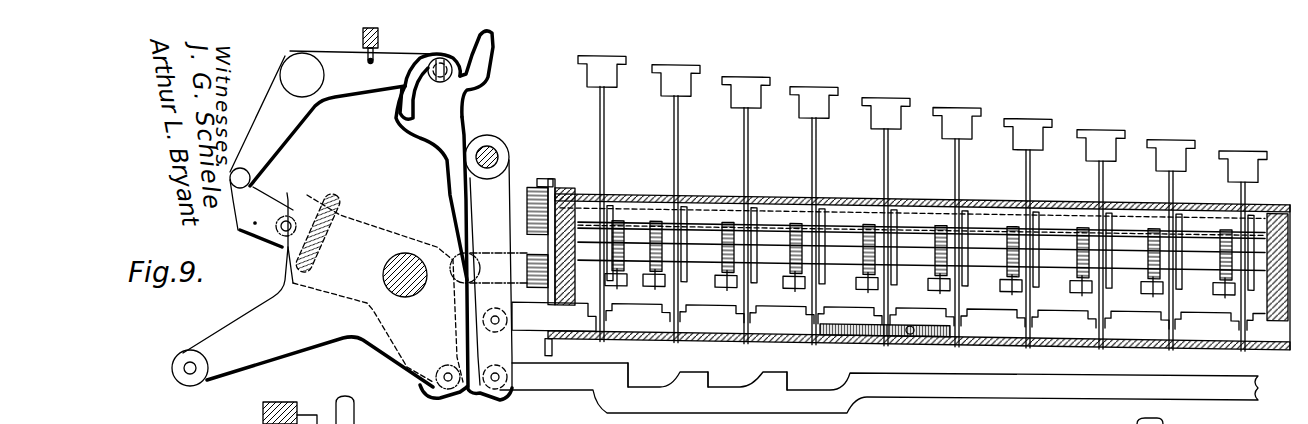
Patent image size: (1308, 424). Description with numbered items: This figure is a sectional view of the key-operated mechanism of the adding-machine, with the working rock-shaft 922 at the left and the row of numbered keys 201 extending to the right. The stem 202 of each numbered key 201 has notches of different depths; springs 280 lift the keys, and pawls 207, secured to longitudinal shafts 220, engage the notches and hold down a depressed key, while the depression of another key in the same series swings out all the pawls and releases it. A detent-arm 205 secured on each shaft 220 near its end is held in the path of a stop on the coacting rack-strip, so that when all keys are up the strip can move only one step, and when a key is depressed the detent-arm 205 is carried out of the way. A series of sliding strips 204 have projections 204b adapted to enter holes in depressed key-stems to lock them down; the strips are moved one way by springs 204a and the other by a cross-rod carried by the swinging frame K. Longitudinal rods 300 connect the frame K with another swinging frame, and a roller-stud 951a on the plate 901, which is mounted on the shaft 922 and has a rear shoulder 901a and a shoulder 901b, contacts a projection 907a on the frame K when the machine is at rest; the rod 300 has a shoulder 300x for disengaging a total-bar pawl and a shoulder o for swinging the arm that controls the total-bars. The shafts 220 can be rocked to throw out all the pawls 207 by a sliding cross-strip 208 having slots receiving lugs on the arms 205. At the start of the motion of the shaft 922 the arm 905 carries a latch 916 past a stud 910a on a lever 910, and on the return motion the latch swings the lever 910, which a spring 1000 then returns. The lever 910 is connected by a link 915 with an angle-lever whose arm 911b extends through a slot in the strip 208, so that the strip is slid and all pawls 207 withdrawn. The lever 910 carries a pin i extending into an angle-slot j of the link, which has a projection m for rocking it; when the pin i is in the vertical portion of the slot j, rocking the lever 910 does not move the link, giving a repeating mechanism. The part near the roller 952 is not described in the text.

The spring 1000 is at (348, 44).
The pin or stud i is at (437, 62).
The projection m is at (492, 53).
The angle-slot j is at (413, 87).
The link 915 is at (460, 117).
The lever 910 is at (280, 133).
The stud 910a is at (248, 175).
The shoulder 901b is at (307, 200).
The rear shoulder 901a is at (418, 166).
The swinging frame K is at (488, 267).
The arm 911b is at (555, 180).
The sliding cross-strip 208 is at (562, 187).
The spring 280 is at (648, 220).
The stem 202 is at (740, 168).
The numbered key 201 is at (697, 70).
The pawl 207 is at (763, 240).
The longitudinal shaft 220 is at (1127, 227).
The detent-arm 205 is at (557, 332).
The sliding strip 204 is at (700, 328).
The spring 204a is at (885, 344).
The projection 204b is at (973, 313).
The shoulder 300x is at (618, 375).
The shoulder o is at (778, 372).
The longitudinal rod 300 is at (879, 388).
The latch 916 is at (237, 215).
The arm 905 is at (280, 240).
The working rock-shaft 922 is at (385, 272).
The plate 901 is at (323, 290).
The roller 952 is at (183, 357).
The roller-stud 951a is at (443, 367).
The projection 907a is at (467, 387).